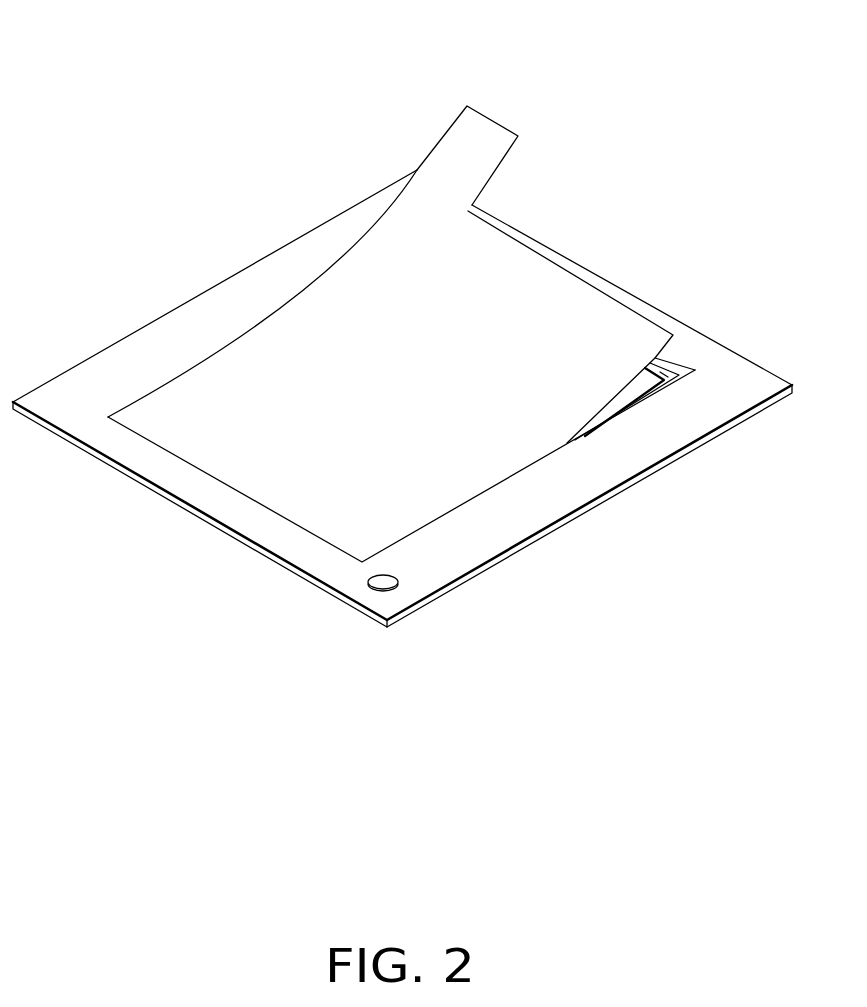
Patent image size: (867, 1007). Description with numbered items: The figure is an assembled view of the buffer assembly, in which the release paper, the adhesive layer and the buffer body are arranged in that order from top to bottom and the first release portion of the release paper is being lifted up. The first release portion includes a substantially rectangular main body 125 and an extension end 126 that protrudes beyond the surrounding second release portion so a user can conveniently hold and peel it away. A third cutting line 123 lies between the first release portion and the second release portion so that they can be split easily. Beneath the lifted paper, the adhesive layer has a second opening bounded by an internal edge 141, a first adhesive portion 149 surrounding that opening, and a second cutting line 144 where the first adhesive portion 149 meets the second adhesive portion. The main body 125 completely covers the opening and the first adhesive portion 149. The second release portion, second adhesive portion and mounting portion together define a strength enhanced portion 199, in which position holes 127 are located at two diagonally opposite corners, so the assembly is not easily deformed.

The third cutting line 123 is at (677, 385).
The main body 125 is at (317, 342).
The extension end 126 is at (480, 148).
The position holes 127 is at (395, 588).
The internal edge 141 is at (615, 400).
The second cutting line 144 is at (665, 340).
The first adhesive portion 149 is at (643, 388).
The strength enhanced portion 199 is at (402, 376).